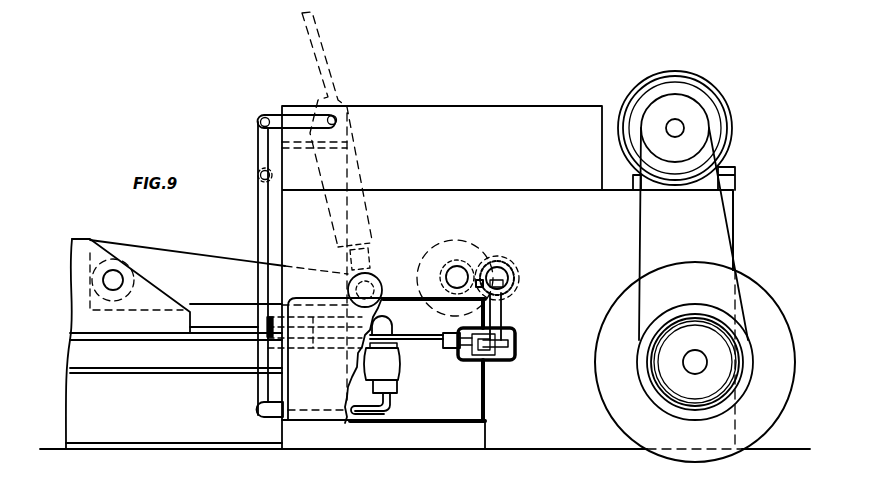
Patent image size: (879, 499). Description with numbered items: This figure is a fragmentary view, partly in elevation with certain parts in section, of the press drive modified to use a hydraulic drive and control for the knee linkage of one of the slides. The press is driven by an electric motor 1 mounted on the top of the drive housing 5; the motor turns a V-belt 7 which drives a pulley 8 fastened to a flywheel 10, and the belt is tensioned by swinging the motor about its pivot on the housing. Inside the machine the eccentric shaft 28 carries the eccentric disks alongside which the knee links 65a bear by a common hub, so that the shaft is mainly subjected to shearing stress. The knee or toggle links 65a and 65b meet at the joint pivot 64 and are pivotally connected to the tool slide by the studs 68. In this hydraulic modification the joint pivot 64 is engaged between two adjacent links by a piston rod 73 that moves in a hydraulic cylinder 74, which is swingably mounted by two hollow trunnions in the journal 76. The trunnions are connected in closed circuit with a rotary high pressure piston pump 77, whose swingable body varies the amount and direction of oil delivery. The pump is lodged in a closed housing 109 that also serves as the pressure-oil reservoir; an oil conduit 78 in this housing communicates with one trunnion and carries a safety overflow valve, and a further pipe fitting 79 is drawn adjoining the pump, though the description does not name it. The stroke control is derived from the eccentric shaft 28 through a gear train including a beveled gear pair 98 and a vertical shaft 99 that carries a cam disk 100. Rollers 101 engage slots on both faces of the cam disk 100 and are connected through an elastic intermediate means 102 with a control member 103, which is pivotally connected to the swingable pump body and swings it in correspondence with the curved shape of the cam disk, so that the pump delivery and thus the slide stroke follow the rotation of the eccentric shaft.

The electric motor 1 is at (723, 113).
The drive housing 5 is at (735, 213).
The V-belt 7 is at (641, 229).
The pulley 8 is at (741, 394).
The flywheel 10 is at (765, 298).
The eccentric shaft 28 is at (458, 272).
The joint pivot 64 is at (347, 290).
The knee link 65a is at (441, 248).
The knee link 65b is at (198, 274).
The stud 68 is at (113, 278).
The piston rod 73 is at (375, 258).
The hydraulic cylinder 74 is at (363, 217).
The journal 76 is at (340, 132).
The rotary high pressure piston pump 77 is at (397, 373).
The oil conduit 78 is at (386, 408).
The inlet pipe elbow 79 is at (387, 320).
The beveled gear pair 98 is at (513, 271).
The vertical shaft 99 is at (501, 310).
The cam disk 100 is at (515, 345).
The roller 101 is at (488, 356).
The elastic intermediate means 102 is at (455, 349).
The control member 103 is at (425, 340).
The closed housing 109 is at (486, 400).